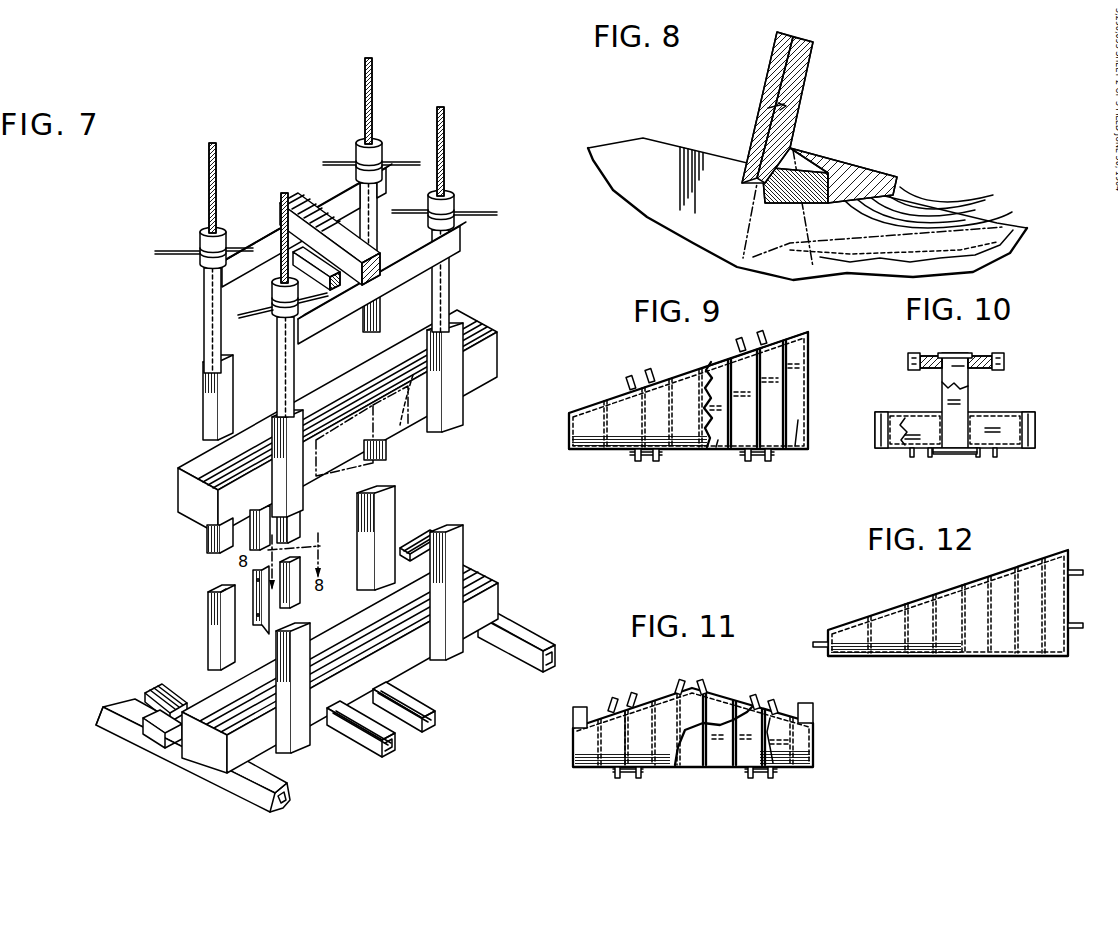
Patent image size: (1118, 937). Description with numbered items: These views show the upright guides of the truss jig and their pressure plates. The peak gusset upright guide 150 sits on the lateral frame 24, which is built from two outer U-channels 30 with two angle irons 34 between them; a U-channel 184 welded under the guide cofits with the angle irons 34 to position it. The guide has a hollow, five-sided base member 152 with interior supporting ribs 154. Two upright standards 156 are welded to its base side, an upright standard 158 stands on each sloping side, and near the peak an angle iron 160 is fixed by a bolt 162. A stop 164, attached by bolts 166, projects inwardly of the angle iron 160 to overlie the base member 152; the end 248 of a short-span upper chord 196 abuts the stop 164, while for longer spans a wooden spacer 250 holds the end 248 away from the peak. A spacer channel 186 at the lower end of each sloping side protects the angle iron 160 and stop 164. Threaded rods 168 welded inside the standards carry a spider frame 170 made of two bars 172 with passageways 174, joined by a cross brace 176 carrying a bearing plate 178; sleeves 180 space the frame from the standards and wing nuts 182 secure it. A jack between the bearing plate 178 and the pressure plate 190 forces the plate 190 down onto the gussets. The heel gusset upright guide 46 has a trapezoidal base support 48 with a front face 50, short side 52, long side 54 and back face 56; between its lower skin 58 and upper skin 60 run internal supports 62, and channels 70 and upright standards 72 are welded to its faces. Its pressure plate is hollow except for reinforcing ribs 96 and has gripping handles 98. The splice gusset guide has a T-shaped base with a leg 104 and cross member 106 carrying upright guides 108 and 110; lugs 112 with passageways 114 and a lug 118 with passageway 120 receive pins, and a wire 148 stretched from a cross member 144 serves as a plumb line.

In FIG. 7, the lateral frame 24 is at (512, 618).
In FIG. 7, the U-channel 30 is at (120, 704).
In FIG. 7, the angle iron 34 is at (416, 712).
In FIG. 9, the heel gusset upright guide 46 is at (808, 333).
In FIG. 9, the base support 48 is at (809, 386).
In FIG. 9, the face 50 is at (726, 448).
In FIG. 9, the short side 52 is at (569, 428).
In FIG. 9, the long side 54 is at (809, 416).
In FIG. 9, the back face 56 is at (712, 358).
In FIG. 9, the lower skin 58 is at (798, 438).
In FIG. 9, the upper skin 60 is at (710, 362).
In FIG. 9, the internal support 62 is at (786, 395).
In FIG. 9, the channel 70 is at (637, 460).
In FIG. 9, the upright standard 72 is at (630, 380).
In FIG. 12, the reinforcing supporting rib 96 is at (907, 618).
In FIG. 12, the gripping handle 98 is at (812, 645).
In FIG. 10, the leg 104 is at (960, 384).
In FIG. 10, the cross member 106 is at (995, 418).
In FIG. 10, the upright guide 108 is at (911, 458).
In FIG. 10, the upright guide 110 is at (926, 358).
In FIG. 10, the lug 112 is at (1032, 418).
In FIG. 10, the passageway 114 is at (1027, 430).
In FIG. 10, the lug 118 is at (908, 361).
In FIG. 10, the passageway 120 is at (912, 364).
In FIG. 10, the cross member 144 is at (966, 455).
In FIG. 10, the wire 148 is at (954, 455).
In FIG. 7, the peak gusset upright guide 150 is at (139, 689).
In FIG. 7, the base member 152 is at (467, 571).
In FIG. 8, the base member 152 is at (612, 147).
In FIG. 11, the interior supporting rib 154 is at (572, 745).
In FIG. 7, the upright standard 156 is at (460, 402).
In FIG. 11, the upright standard 156 is at (748, 775).
In FIG. 7, the upright standard 158 is at (392, 463).
In FIG. 11, the upright standard 158 is at (628, 697).
In FIG. 7, the angle iron 160 is at (297, 588).
In FIG. 8, the angle iron 160 is at (801, 70).
In FIG. 11, the angle iron 160 is at (677, 688).
In FIG. 7, the bolt 162 is at (268, 612).
In FIG. 8, the bolt 162 is at (800, 156).
In FIG. 8, the stop 164 is at (776, 45).
In FIG. 11, the stop 164 is at (703, 687).
In FIG. 8, the bolt 166 is at (790, 105).
In FIG. 7, the threaded rod 168 is at (212, 140).
In FIG. 7, the spider frame 170 is at (267, 230).
In FIG. 7, the bar 172 is at (262, 270).
In FIG. 7, the passageway 174 is at (381, 165).
In FIG. 7, the cross brace 176 is at (308, 210).
In FIG. 7, the bearing plate 178 is at (323, 297).
In FIG. 7, the sleeve 180 is at (378, 232).
In FIG. 7, the wing nut 182 is at (201, 240).
In FIG. 7, the U-channel 184 is at (388, 698).
In FIG. 7, the spacer channel 186 is at (165, 693).
In FIG. 11, the spacer channel 186 is at (585, 710).
In FIG. 7, the pressure plate 190 is at (481, 327).
In FIG. 8, the upper chord 196 is at (927, 212).
In FIG. 8, the end 248 is at (823, 217).
In FIG. 8, the spacer 250 is at (760, 198).